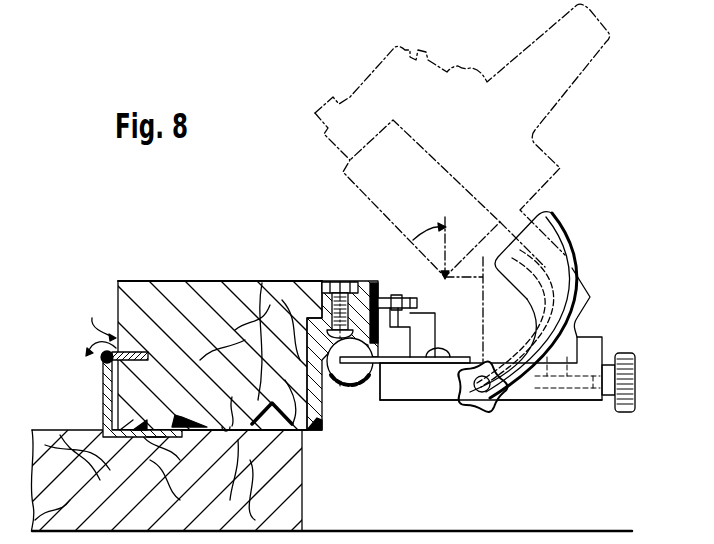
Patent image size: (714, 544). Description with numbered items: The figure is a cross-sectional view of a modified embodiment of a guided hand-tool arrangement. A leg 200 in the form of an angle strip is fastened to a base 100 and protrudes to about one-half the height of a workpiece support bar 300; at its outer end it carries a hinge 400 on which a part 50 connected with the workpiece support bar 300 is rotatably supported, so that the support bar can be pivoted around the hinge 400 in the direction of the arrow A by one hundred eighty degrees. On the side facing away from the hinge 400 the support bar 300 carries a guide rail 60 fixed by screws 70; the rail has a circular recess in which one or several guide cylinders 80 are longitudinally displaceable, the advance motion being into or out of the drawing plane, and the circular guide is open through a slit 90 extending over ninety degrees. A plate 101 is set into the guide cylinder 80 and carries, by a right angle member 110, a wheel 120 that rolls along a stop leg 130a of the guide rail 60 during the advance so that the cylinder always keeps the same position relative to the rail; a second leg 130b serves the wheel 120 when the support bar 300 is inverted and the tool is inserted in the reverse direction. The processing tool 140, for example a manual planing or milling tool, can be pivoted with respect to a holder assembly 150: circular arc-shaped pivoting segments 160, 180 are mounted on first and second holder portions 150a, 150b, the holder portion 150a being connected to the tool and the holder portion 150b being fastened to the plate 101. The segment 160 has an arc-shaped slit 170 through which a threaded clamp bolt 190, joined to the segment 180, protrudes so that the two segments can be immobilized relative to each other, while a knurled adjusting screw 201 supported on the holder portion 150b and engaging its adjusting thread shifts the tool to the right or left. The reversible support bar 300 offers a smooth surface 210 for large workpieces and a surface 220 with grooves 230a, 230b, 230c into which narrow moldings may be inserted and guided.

The part 50 is at (142, 351).
The guide rail 60 is at (347, 385).
The screws 70 is at (337, 280).
The guide cylinder 80 is at (369, 380).
The slit 90 is at (385, 390).
The base 100 is at (300, 517).
The plate 101 is at (420, 364).
The right angle member 110 is at (436, 336).
The wheel 120 is at (417, 303).
The stop leg 130a is at (373, 280).
The second leg 130b is at (322, 430).
The processing tool 140 is at (549, 160).
The holder assembly 150 is at (554, 414).
The first holder portion 150a is at (581, 293).
The second holder portion 150b is at (593, 402).
The pivoting segment 160 is at (515, 398).
The slit 170 is at (537, 333).
The pivoting segment 180 is at (570, 240).
The threaded bolt 190 is at (463, 410).
The leg 200 is at (103, 395).
The knurled adjusting screw 201 is at (627, 411).
The surface 210 is at (260, 279).
The surface 220 is at (212, 400).
The groove 230a is at (140, 437).
The groove 230b is at (224, 462).
The groove 230c is at (302, 463).
The workpiece support bar 300 is at (218, 285).
The hinge 400 is at (101, 358).
The arrow A is at (99, 325).